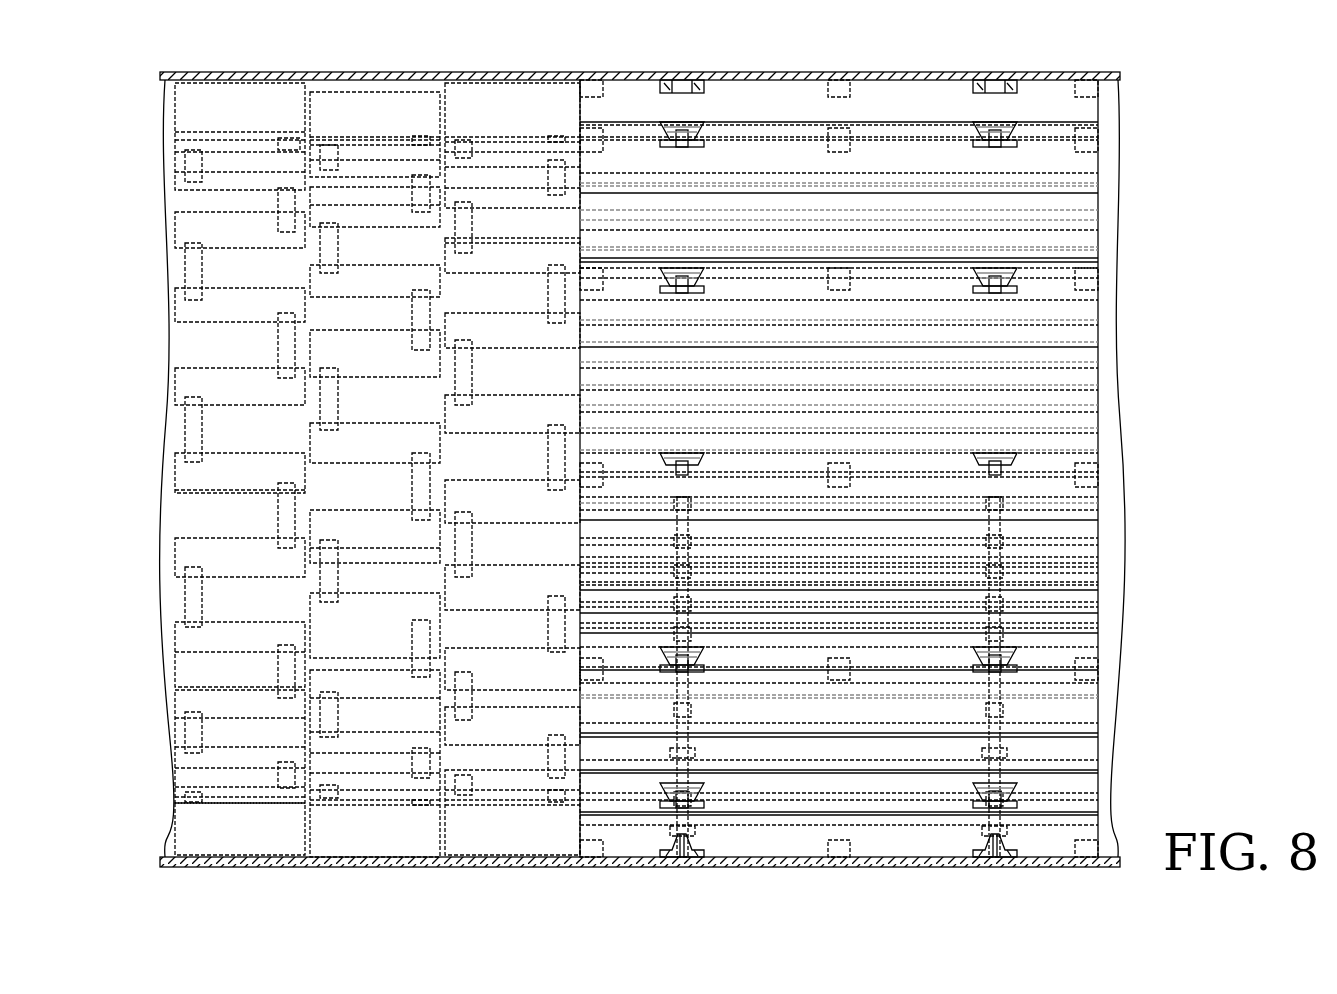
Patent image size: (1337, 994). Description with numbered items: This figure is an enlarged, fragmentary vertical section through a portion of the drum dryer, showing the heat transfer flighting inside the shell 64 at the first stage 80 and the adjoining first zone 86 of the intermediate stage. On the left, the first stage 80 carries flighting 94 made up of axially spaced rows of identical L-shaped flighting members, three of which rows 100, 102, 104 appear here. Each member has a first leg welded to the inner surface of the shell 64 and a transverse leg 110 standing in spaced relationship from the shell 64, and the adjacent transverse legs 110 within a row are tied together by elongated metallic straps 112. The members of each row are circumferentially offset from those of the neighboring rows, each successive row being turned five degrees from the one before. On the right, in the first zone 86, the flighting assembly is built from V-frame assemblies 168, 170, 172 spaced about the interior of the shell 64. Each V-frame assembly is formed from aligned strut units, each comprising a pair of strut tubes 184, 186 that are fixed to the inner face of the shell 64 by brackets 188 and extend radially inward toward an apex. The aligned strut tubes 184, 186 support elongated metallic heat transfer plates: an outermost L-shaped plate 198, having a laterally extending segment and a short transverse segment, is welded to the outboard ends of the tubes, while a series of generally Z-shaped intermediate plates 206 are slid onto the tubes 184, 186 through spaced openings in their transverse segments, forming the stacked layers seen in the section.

The shell 64 is at (720, 72).
The first stage 80 is at (385, 118).
The first zone 86 is at (1028, 104).
The flighting 94 is at (175, 650).
The flighting row 100 is at (228, 105).
The flighting row 102 is at (337, 118).
The flighting row 104 is at (522, 103).
The transverse leg 110 is at (195, 312).
The metallic strap 112 is at (195, 430).
The V-frame assembly 168 is at (1087, 112).
The V-frame assembly 170 is at (1085, 378).
The V-frame assembly 172 is at (1098, 750).
The strut tube 184 is at (1062, 600).
The strut tube 186 is at (1002, 710).
The bracket 188 is at (832, 92).
The L-shaped plate 198 is at (910, 153).
The Z-shaped intermediate plate 206 is at (1062, 358).